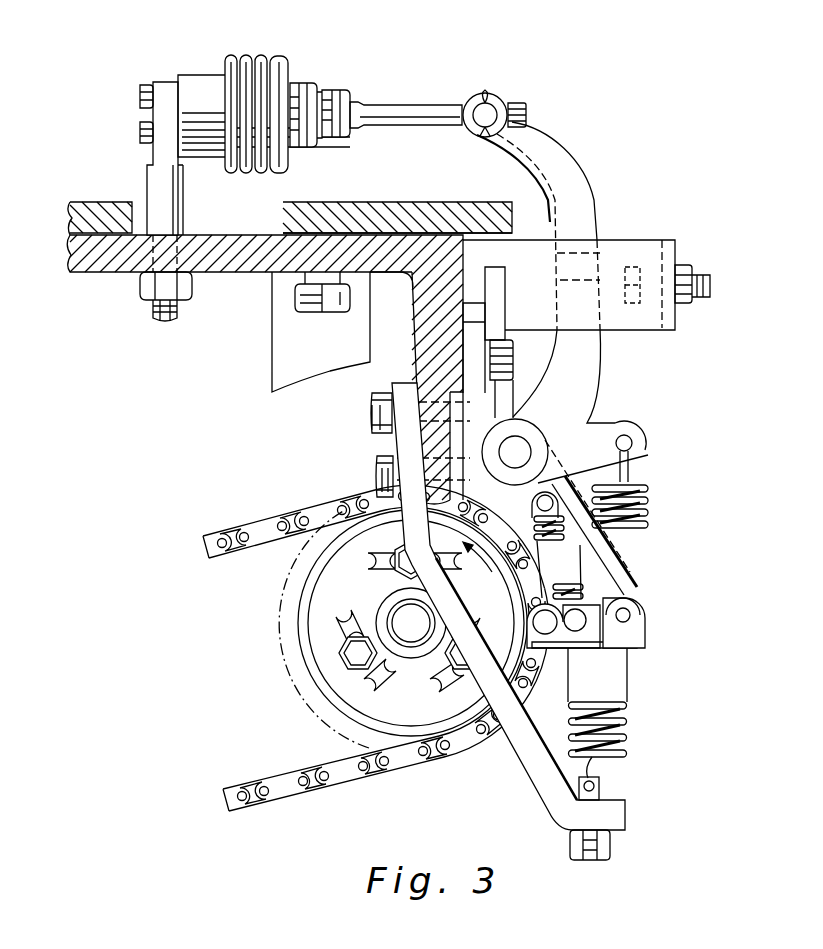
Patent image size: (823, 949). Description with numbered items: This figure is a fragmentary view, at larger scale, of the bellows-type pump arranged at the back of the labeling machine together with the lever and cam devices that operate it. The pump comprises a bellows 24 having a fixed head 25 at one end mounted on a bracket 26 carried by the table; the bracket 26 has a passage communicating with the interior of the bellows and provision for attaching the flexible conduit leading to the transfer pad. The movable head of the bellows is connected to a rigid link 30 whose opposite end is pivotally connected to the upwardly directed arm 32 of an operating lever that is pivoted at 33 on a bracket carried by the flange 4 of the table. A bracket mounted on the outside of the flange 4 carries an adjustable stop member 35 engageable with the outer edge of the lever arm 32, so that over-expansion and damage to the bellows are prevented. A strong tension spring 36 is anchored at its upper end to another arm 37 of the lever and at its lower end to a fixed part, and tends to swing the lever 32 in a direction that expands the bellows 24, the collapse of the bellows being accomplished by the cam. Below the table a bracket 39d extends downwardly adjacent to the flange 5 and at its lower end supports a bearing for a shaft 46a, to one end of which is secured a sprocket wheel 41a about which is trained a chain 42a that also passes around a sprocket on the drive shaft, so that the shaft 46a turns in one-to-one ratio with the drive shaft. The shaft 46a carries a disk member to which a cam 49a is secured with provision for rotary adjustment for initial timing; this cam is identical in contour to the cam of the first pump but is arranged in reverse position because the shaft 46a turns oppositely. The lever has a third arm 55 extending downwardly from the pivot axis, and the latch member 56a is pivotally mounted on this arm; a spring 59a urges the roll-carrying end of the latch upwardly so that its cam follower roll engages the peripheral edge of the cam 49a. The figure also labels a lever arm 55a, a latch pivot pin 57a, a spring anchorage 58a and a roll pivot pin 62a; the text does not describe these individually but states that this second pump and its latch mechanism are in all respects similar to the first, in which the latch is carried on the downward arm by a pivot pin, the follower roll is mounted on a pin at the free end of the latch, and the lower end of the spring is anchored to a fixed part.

The flange 4 is at (312, 47).
The flange 5 is at (417, 337).
The bellows 24 is at (257, 55).
The fixed head 25 is at (190, 82).
The bracket 26 is at (147, 173).
The rigid link 30 is at (398, 107).
The upwardly directed arm 32 is at (575, 172).
The pivot 33 is at (517, 447).
The adjustable stop member 35 is at (693, 278).
The tension spring 36 is at (623, 733).
The lever arm 37 is at (608, 433).
The bracket 39d is at (280, 345).
The sprocket wheel 41a is at (298, 672).
The chain 42a is at (240, 810).
The shaft 46a is at (407, 615).
The cam 49a is at (310, 607).
The third arm 55 is at (507, 627).
The link bar 55a is at (610, 573).
The latch member 56a is at (577, 628).
The pivot pin 57a is at (628, 615).
The spring bracket 58a is at (621, 803).
The spring 59a is at (593, 537).
The rod 62a is at (548, 630).